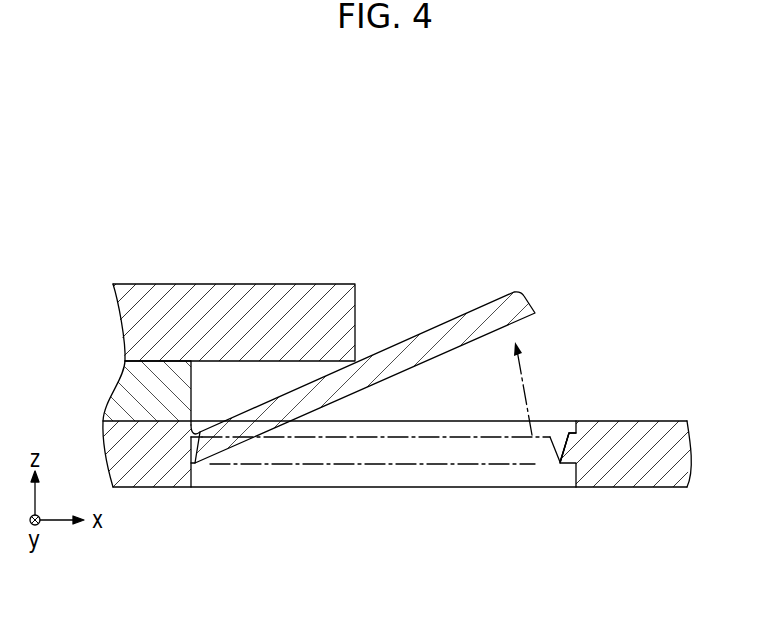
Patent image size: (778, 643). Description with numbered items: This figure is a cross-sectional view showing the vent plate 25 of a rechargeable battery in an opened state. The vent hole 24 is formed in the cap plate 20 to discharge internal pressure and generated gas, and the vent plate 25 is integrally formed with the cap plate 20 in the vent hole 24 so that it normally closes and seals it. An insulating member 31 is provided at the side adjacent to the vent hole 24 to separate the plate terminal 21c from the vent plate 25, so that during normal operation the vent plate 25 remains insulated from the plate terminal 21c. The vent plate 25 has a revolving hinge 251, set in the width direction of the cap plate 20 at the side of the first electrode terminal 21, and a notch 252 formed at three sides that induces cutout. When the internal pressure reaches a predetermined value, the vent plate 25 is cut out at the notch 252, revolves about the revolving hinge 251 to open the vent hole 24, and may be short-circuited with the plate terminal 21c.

The first electrode terminal 21 is at (142, 262).
The plate terminal 21c is at (292, 305).
The vent plate 25 is at (470, 320).
The vent hole 24 is at (570, 432).
The insulating member 31 is at (150, 405).
The revolving hinge 251 is at (195, 437).
The notch 252 is at (558, 447).
The cap plate 20 is at (653, 470).